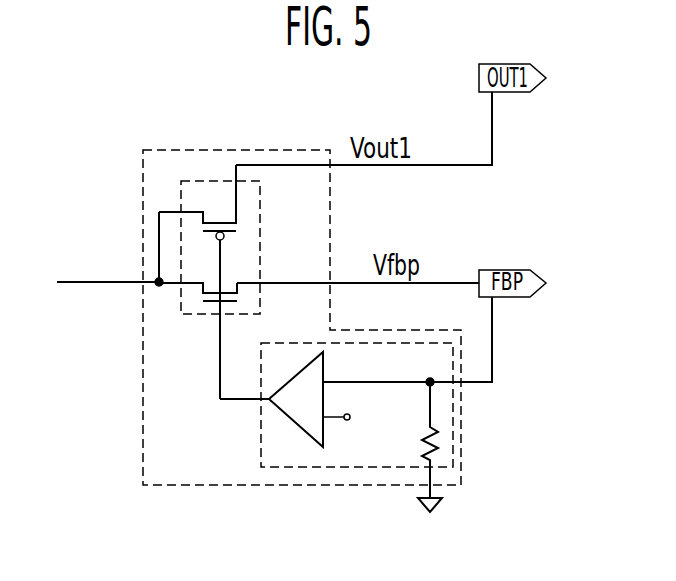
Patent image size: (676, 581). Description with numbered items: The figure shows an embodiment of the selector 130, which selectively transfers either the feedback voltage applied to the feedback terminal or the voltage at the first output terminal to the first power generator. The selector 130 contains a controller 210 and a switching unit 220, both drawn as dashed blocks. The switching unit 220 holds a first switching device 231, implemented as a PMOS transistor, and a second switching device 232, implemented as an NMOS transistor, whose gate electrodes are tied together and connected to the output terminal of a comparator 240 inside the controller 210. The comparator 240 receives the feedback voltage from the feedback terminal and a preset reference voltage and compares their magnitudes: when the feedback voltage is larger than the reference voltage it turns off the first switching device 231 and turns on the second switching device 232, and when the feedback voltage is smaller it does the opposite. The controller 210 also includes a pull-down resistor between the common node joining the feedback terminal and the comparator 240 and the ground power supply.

The selector 130 is at (275, 486).
The controller 210 is at (360, 468).
The switching unit 220 is at (207, 181).
The first switching device 231 is at (233, 219).
The second switching device 232 is at (233, 290).
The comparator 240 is at (285, 413).